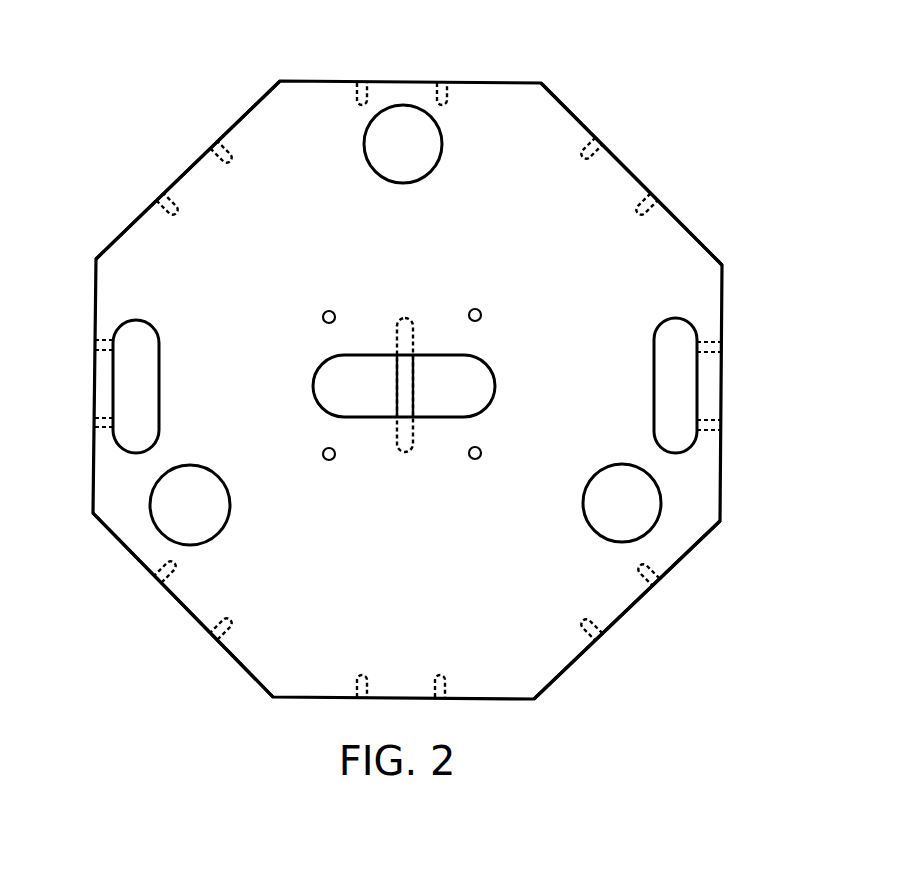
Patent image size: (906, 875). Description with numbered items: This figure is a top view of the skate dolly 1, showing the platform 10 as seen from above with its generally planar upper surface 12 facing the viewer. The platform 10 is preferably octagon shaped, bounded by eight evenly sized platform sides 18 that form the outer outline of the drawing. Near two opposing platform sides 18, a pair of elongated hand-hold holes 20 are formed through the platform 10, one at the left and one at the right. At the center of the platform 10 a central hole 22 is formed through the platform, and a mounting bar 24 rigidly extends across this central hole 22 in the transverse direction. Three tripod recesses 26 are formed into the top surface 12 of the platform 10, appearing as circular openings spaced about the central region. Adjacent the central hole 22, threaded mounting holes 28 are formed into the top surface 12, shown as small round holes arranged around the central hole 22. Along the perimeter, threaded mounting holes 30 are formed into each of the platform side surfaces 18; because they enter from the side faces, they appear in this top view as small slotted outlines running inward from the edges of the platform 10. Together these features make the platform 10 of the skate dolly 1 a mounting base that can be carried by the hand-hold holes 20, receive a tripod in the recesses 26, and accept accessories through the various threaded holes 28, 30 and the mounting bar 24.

The skate dolly 1 is at (738, 103).
The platform 10 is at (684, 216).
The upper surface 12 is at (383, 598).
The platform sides 18 is at (123, 232).
The hand-hold holes 20 is at (159, 362).
The central hole 22 is at (495, 378).
The mounting bar 24 is at (414, 370).
The tripod recesses 26 is at (218, 478).
The threaded mounting holes 28 is at (336, 307).
The threaded mounting holes 30 is at (362, 83).